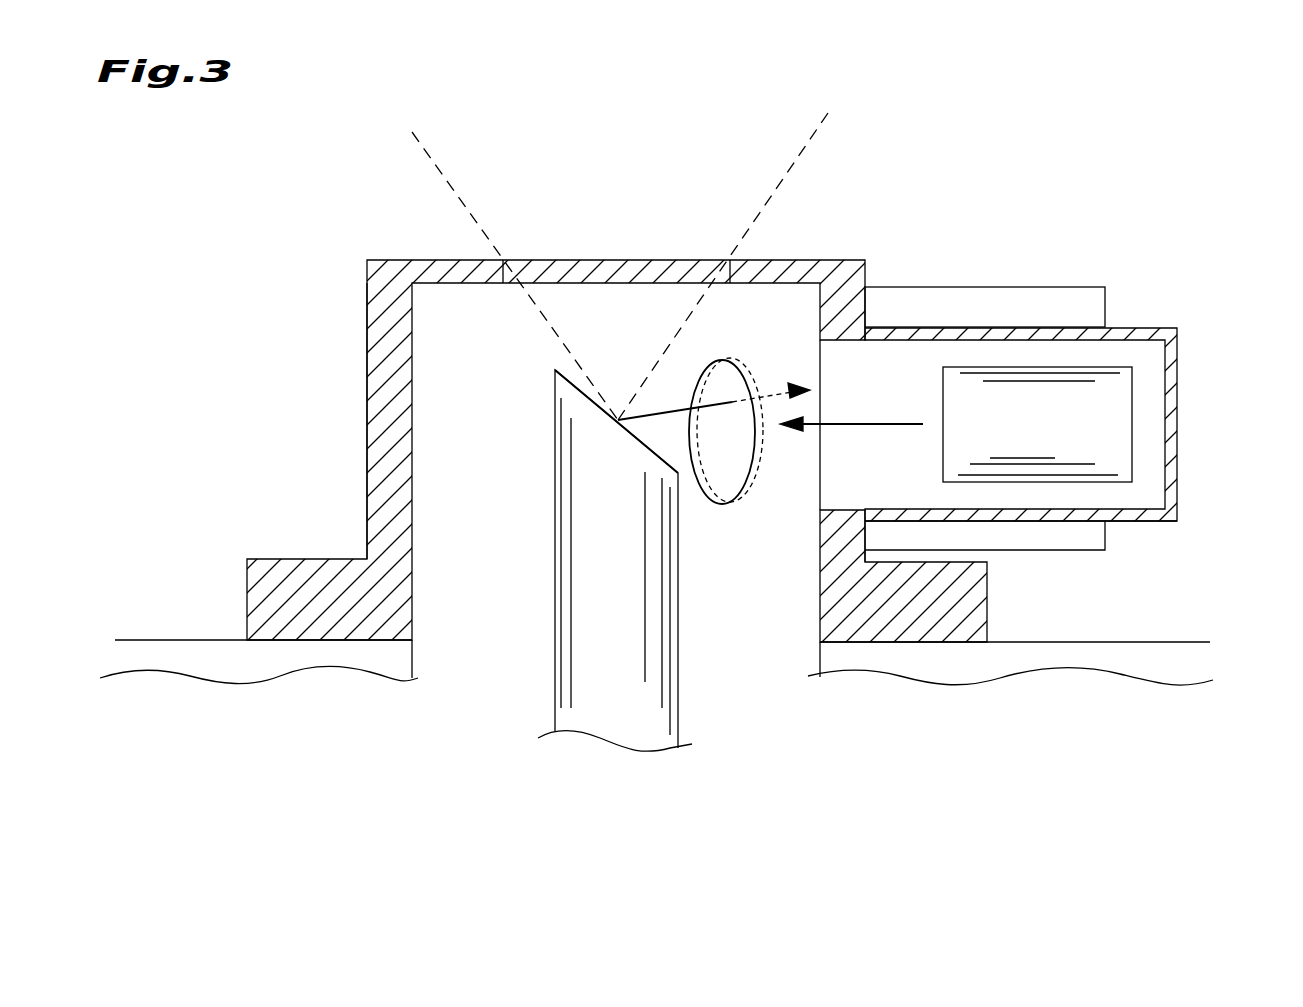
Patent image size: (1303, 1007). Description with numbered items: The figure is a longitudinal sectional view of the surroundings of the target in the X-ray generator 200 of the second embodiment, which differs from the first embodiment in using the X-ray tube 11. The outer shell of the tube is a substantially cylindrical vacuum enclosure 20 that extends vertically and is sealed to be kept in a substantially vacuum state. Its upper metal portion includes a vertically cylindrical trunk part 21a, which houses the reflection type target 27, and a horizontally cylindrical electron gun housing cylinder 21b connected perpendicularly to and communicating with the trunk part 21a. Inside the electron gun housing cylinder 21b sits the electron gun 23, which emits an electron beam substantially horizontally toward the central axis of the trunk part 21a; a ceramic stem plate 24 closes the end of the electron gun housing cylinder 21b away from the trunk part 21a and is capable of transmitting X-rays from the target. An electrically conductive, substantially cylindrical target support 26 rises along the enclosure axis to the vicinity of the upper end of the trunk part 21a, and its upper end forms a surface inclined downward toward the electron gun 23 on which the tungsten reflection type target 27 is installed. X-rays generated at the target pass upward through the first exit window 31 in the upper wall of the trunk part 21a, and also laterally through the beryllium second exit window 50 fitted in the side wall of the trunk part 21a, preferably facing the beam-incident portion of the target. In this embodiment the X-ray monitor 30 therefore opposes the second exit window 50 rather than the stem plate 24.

The X-ray tube 11 is at (612, 411).
The vacuum enclosure 20 is at (367, 393).
The trunk part 21a is at (375, 478).
The electron gun housing cylinder 21b is at (1147, 518).
The electron gun 23 is at (955, 455).
The stem plate 24 is at (1175, 390).
The target support 26 is at (660, 724).
The reflection type target 27 is at (568, 382).
The X-ray monitor 30 is at (1083, 298).
The first exit window 31 is at (648, 272).
The second exit window 50 is at (727, 478).
The X-ray generator 200 is at (885, 828).